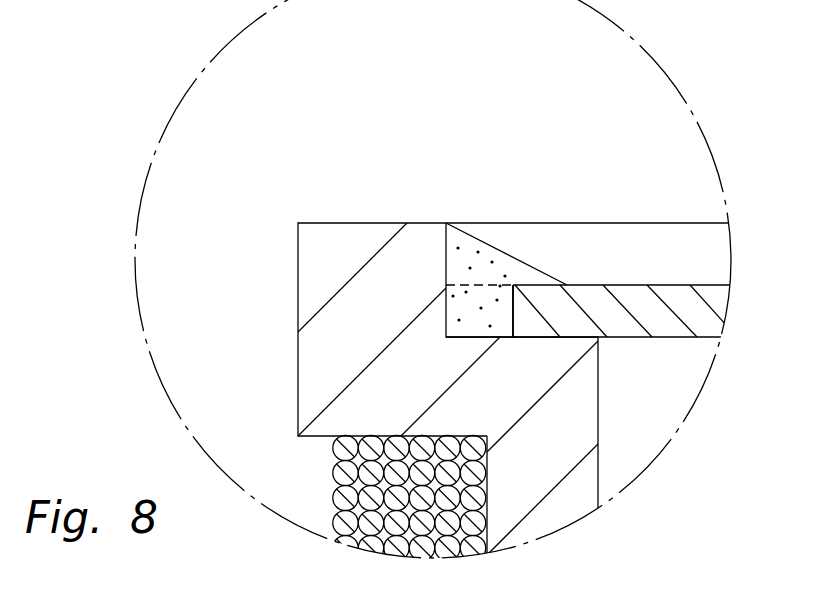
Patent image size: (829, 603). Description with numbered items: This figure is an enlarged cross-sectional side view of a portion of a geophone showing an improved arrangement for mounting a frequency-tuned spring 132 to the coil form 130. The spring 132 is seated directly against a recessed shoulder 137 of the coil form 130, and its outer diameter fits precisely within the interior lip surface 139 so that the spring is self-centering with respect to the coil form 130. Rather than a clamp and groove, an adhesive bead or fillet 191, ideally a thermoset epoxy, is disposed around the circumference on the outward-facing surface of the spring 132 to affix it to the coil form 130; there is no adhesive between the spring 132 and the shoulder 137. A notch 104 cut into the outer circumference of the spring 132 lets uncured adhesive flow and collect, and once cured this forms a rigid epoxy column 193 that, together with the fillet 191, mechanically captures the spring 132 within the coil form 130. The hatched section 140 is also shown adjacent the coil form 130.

The notch 104 is at (513, 313).
The coil form 130 is at (298, 294).
The frequency-tuned spring 132 is at (651, 223).
The recessed shoulder 137 is at (581, 338).
The interior lip surface 139 is at (448, 243).
The insulation beads 140 is at (333, 470).
The adhesive bead or fillet 191 is at (503, 257).
The epoxy column 193 is at (456, 318).